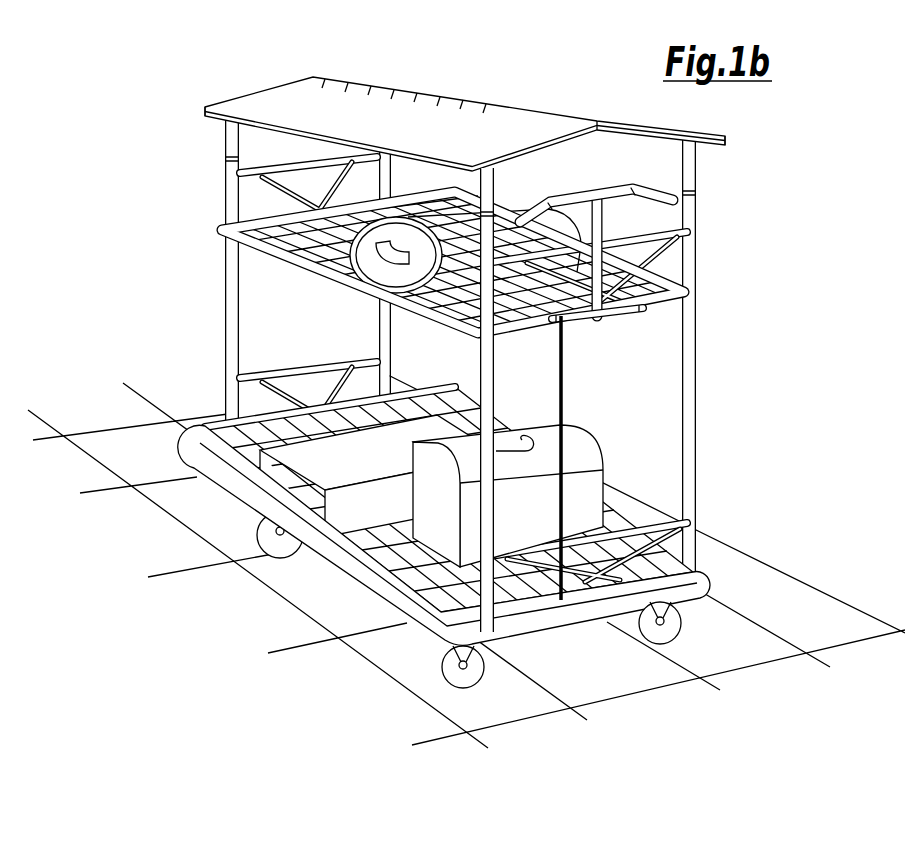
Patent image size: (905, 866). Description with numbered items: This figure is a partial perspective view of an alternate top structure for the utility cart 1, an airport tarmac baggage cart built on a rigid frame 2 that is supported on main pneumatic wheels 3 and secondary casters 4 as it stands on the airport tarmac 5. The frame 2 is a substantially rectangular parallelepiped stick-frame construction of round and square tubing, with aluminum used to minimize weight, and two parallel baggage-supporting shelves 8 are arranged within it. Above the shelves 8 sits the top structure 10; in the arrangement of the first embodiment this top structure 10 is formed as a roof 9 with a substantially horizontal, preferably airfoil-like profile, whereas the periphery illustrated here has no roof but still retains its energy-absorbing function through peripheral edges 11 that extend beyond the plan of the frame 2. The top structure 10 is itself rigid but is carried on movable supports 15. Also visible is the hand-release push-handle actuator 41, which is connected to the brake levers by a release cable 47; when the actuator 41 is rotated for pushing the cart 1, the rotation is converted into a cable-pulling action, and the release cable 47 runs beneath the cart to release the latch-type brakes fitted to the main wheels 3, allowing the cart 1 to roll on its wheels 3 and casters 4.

The utility cart 1 is at (232, 600).
The rigid frame 2 is at (692, 452).
The main pneumatic wheels 3 is at (288, 557).
The secondary casters 4 is at (672, 633).
The airport tarmac 5 is at (583, 697).
The baggage-supporting shelves 8 is at (278, 430).
The roof 9 is at (440, 100).
The top structure 10 is at (745, 140).
The peripheral edges 11 is at (258, 90).
The movable supports 15 is at (733, 152).
The push-handle actuator 41 is at (604, 192).
The release cable 47 is at (564, 411).